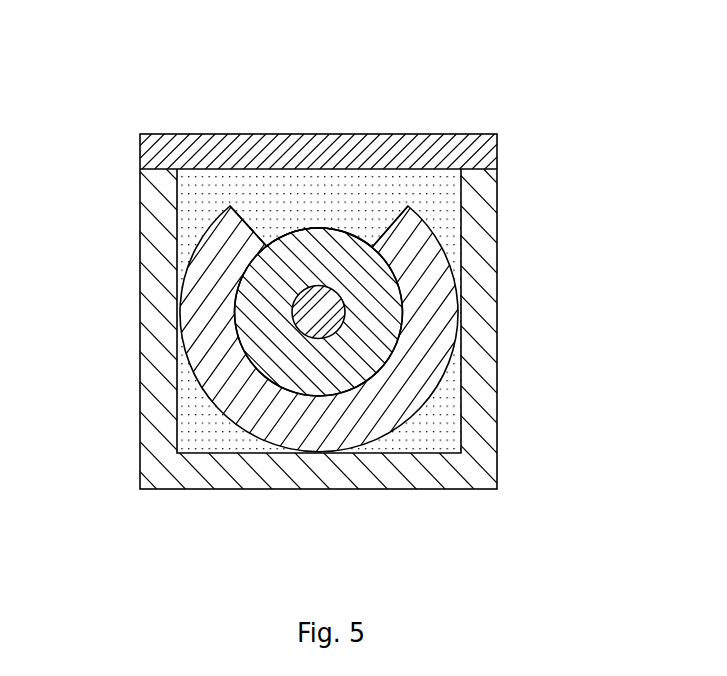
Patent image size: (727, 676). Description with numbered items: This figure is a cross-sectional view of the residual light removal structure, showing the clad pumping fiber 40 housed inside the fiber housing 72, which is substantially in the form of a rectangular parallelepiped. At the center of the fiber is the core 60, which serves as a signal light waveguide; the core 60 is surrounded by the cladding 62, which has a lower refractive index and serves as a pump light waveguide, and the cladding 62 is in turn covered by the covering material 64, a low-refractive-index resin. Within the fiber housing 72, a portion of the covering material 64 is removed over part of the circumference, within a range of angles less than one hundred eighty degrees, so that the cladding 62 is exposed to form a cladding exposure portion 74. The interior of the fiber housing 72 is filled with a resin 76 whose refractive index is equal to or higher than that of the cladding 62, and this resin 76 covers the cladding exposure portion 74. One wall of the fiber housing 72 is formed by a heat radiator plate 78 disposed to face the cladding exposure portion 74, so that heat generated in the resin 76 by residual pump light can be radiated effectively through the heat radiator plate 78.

The fiber housing 72 is at (490, 108).
The heat radiator plate 78 is at (392, 146).
The resin 76 is at (422, 184).
The cladding exposure portion 74 is at (316, 228).
The covering material 64 is at (325, 431).
The cladding 62 is at (387, 305).
The core 60 is at (302, 305).
The clad pumping fiber 40 is at (215, 212).